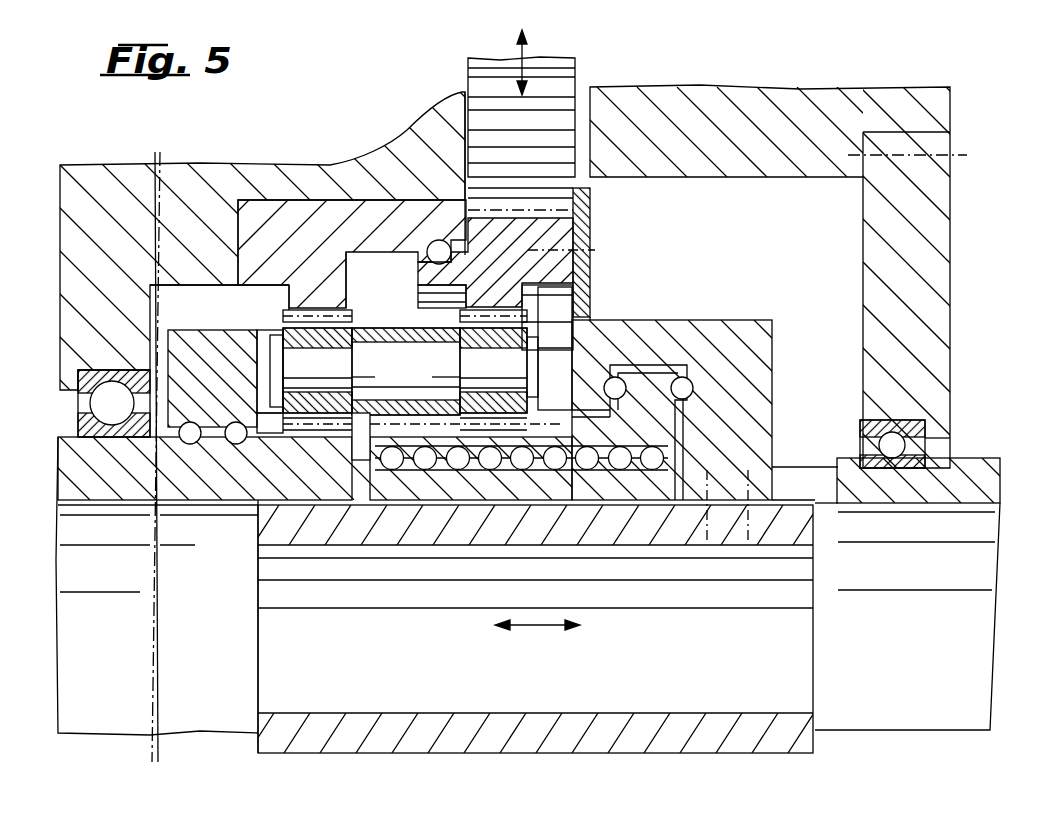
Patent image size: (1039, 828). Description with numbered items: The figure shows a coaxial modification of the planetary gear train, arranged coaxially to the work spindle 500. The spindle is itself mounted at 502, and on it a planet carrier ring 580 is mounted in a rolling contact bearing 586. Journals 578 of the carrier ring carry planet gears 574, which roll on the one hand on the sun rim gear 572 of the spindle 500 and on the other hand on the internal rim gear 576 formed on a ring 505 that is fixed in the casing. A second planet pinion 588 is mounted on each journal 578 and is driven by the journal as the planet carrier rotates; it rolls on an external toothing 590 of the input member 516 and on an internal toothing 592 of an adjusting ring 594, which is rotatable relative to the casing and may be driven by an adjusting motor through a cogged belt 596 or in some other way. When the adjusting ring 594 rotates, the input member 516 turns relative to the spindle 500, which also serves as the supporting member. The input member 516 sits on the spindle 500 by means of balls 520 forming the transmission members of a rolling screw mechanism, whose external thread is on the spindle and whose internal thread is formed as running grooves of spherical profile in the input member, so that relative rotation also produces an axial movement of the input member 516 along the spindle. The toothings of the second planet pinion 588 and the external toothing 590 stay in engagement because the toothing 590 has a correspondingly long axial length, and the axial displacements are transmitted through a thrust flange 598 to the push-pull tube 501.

The work spindle 500 is at (177, 712).
The push-pull tube 501 is at (262, 608).
The spindle mounting 502 is at (112, 392).
The ring 505 is at (323, 215).
The input member 516 is at (655, 385).
The balls 520 is at (522, 462).
The sun rim gear 572 is at (275, 428).
The planet gears 574 is at (285, 320).
The internal rim gear 576 is at (338, 316).
The journals 578 is at (417, 381).
The planet carrier ring 580 is at (220, 350).
The rolling contact bearing 586 is at (213, 447).
The second planet pinion 588 is at (460, 323).
The external toothing 590 is at (405, 425).
The internal toothing 592 is at (515, 318).
The adjusting ring 594 is at (582, 250).
The cogged belt 596 is at (566, 76).
The thrust flange 598 is at (745, 338).